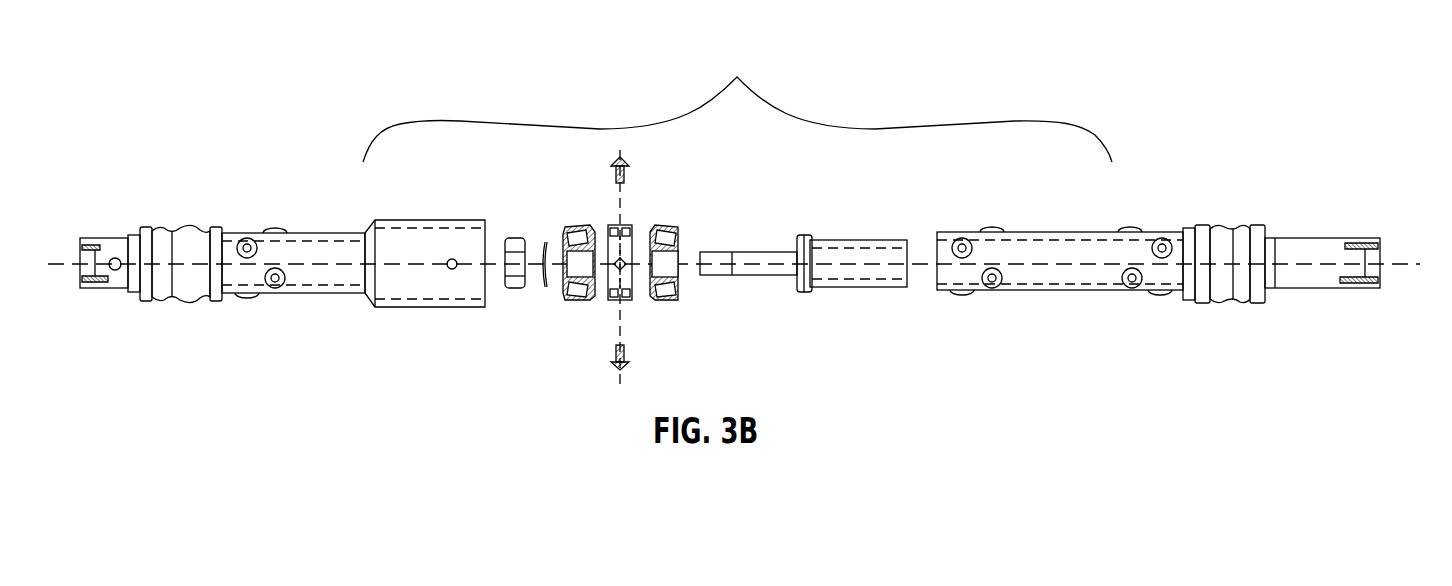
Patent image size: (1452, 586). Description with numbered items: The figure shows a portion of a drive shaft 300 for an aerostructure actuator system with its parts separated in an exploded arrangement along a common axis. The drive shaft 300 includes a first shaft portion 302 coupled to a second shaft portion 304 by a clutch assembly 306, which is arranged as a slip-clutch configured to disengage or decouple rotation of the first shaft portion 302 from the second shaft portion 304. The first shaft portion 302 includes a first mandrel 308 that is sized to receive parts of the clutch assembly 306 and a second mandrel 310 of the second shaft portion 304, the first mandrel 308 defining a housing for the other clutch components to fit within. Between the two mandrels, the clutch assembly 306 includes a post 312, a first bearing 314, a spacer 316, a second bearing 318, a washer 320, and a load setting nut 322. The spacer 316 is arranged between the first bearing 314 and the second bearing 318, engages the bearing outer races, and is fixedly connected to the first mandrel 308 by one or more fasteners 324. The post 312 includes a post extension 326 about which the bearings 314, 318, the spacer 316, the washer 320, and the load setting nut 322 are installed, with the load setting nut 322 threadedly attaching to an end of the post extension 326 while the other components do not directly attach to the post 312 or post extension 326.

The drive shaft 300 is at (232, 136).
The first shaft portion 302 is at (190, 250).
The second shaft portion 304 is at (1228, 235).
The clutch assembly 306 is at (737, 102).
The first mandrel 308 is at (432, 221).
The second mandrel 310 is at (1053, 290).
The post 312 is at (805, 292).
The first bearing 314 is at (575, 228).
The spacer 316 is at (632, 228).
The second bearing 318 is at (665, 303).
The washer 320 is at (547, 290).
The load setting nut 322 is at (510, 290).
The fastener 324 is at (628, 365).
The post extension 326 is at (762, 252).